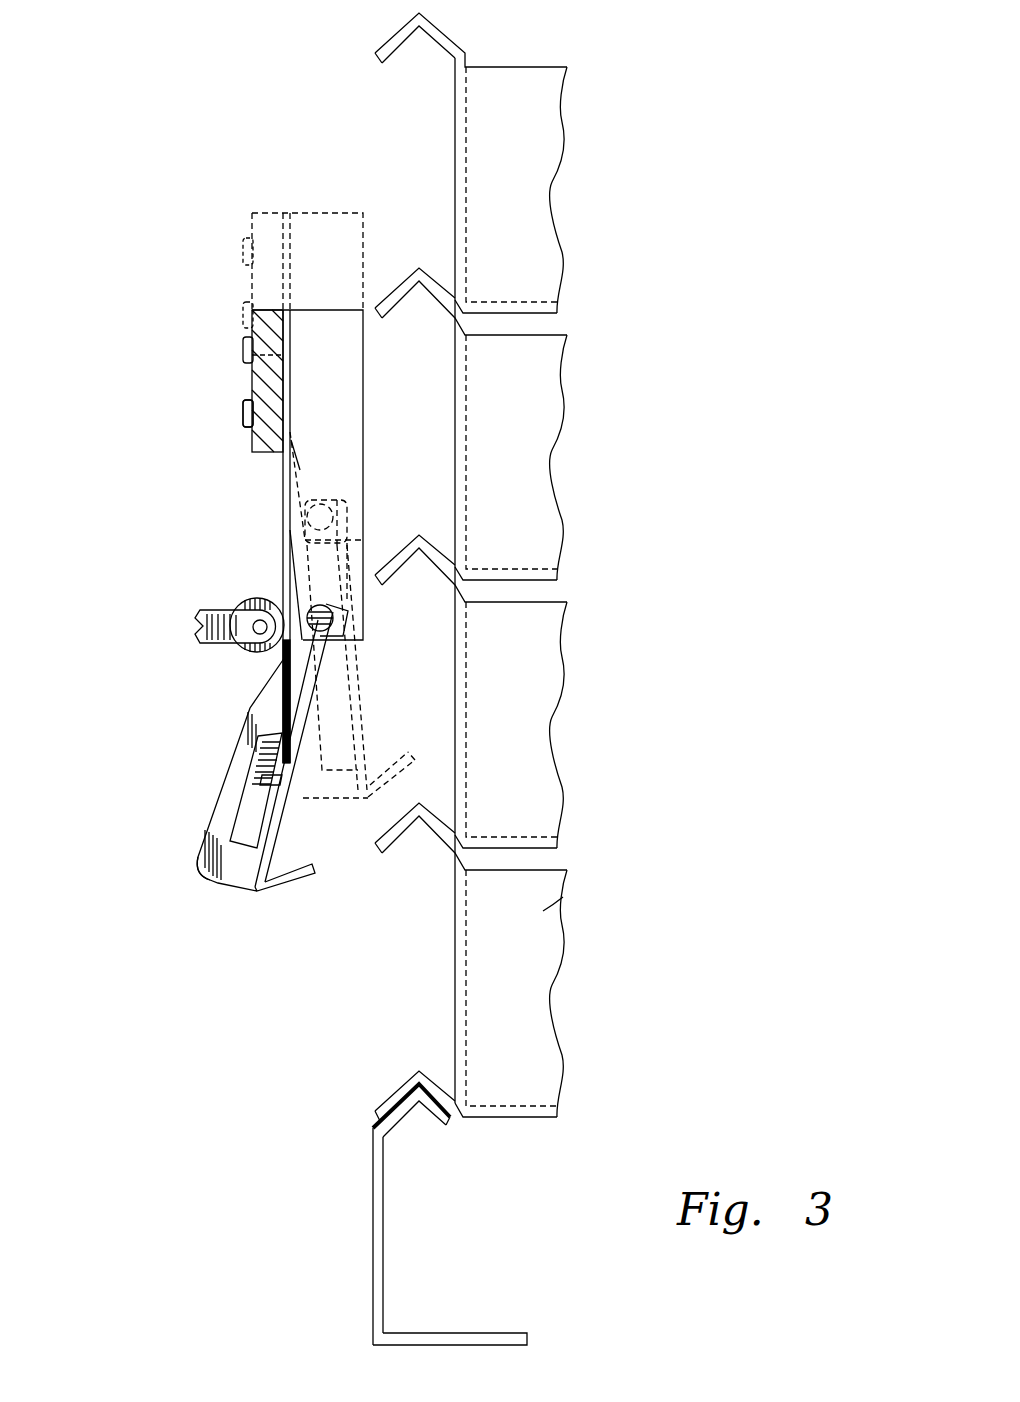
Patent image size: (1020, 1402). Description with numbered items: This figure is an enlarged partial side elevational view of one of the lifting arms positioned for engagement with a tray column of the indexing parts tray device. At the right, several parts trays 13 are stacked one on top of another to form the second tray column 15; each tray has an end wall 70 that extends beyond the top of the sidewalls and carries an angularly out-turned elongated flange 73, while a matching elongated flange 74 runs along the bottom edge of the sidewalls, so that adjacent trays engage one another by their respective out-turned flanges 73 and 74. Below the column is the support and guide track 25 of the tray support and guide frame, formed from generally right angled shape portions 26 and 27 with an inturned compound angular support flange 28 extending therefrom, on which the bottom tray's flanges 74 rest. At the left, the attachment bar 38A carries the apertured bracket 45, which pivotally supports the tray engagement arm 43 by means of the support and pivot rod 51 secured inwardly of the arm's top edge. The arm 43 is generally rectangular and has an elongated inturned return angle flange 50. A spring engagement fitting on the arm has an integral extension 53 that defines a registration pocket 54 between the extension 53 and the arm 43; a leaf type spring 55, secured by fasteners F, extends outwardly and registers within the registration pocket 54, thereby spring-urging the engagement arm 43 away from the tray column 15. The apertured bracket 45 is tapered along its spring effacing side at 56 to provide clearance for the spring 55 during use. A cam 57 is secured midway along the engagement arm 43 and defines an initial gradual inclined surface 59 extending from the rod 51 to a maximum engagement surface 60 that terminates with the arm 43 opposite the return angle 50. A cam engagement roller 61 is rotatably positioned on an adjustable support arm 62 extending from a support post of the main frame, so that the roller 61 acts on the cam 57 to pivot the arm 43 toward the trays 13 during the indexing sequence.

The parts tray 13 is at (540, 808).
The second tray column 15 is at (556, 702).
The support and guide track 25 is at (376, 1223).
The right angled shape portion 26 is at (483, 1340).
The right angled shape portion 27 is at (385, 1258).
The inturned compound angular support flange 28 is at (397, 1118).
The attachment bar 38A is at (256, 379).
The fasteners F is at (250, 418).
The tray engagement arm 43 is at (262, 845).
The apertured bracket 45 is at (305, 475).
The inturned return angle flange 50 is at (287, 885).
The support and pivot rod 51 is at (305, 648).
The integral extension 53 is at (263, 757).
The registration pocket 54 is at (253, 800).
The leaf type spring 55 is at (286, 522).
The tapered spring effacing side 56 is at (288, 573).
The cam 57 is at (208, 880).
The initial gradual inclined surface 59 is at (283, 660).
The maximum engagement surface 60 is at (207, 827).
The cam engagement roller 61 is at (248, 657).
The adjustable support arm 62 is at (212, 620).
The end wall 70 is at (456, 983).
The angularly out-turned elongated flange 73 is at (397, 853).
The elongated flange 74 is at (400, 826).